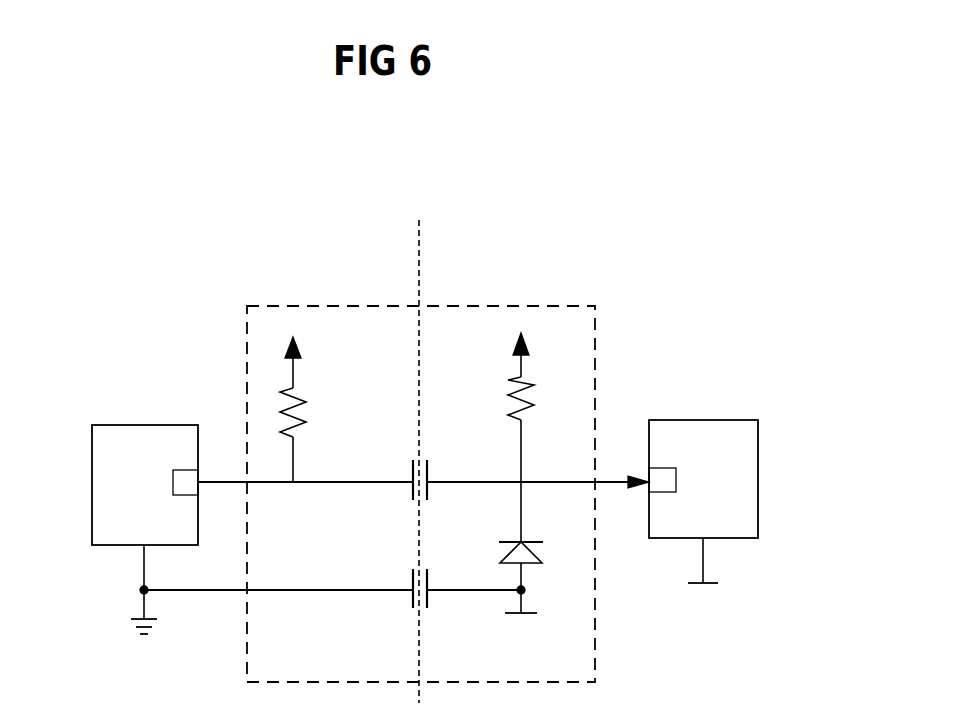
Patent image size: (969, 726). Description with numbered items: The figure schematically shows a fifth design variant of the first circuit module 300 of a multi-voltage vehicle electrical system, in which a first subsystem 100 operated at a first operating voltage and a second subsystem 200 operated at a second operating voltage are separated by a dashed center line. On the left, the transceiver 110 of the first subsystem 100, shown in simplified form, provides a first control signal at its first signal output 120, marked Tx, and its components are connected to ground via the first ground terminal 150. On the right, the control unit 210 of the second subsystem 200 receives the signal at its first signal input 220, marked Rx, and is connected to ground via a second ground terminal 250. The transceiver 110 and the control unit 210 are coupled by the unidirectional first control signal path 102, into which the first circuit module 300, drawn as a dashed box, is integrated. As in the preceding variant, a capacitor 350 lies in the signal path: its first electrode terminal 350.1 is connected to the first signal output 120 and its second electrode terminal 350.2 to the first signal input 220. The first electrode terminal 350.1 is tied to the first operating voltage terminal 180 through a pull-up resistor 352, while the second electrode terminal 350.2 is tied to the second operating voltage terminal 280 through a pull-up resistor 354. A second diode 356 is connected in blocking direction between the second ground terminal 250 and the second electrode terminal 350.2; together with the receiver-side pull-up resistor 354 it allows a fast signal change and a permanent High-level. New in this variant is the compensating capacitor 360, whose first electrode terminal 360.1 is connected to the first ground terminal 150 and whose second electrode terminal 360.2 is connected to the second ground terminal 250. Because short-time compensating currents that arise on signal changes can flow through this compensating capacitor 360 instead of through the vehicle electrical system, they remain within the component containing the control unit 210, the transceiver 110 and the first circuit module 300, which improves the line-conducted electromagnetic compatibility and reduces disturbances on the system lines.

The first subsystem 100 is at (233, 254).
The second subsystem 200 is at (648, 255).
The first circuit module 300 is at (320, 630).
The transceiver 110 is at (93, 423).
The first signal output 120 is at (173, 470).
The first control signal path 102 is at (220, 478).
The first ground terminal 150 is at (143, 636).
The first operating voltage terminal 180 is at (298, 350).
The second operating voltage terminal 280 is at (526, 347).
The pull-up resistor 352 is at (300, 408).
The pull-up resistor 354 is at (515, 386).
The capacitor 350 is at (428, 462).
The first electrode terminal 350.1 is at (411, 486).
The second electrode terminal 350.2 is at (432, 487).
The second diode 356 is at (500, 556).
The compensating capacitor 360 is at (411, 606).
The first electrode terminal 360.1 is at (410, 580).
The second electrode terminal 360.2 is at (430, 597).
The second ground terminal 250 is at (528, 615).
The control unit 210 is at (707, 420).
The first signal input 220 is at (676, 470).